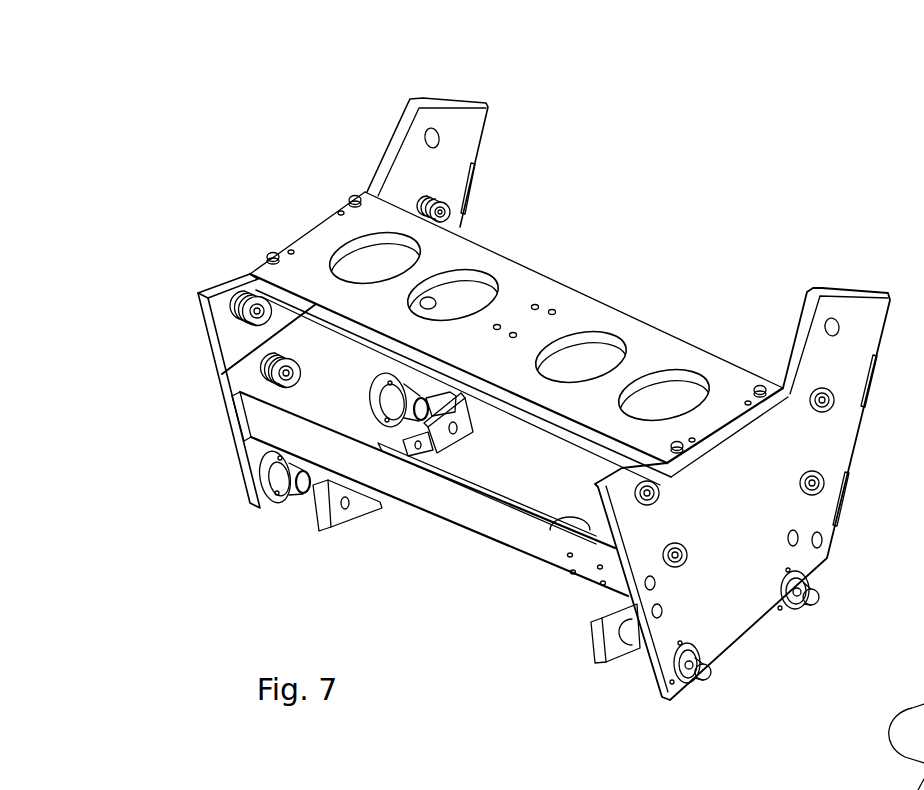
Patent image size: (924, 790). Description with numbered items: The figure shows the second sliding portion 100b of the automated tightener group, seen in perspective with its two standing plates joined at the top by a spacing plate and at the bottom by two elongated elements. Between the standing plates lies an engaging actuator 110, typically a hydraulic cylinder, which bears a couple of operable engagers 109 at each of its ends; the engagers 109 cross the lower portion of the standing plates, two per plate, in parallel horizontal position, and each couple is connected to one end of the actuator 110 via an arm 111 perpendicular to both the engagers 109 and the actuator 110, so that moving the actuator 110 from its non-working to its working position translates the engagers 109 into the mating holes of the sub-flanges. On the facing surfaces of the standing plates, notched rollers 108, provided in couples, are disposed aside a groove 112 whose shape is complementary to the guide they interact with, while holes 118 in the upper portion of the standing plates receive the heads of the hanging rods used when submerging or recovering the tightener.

The second sliding portion 100b is at (605, 258).
The notched rollers 108 is at (428, 300).
The operable engagers 109 is at (307, 487).
The engaging actuator 110 is at (460, 471).
The arm 111 is at (597, 634).
The groove 112 is at (234, 362).
The holes 118 is at (437, 137).